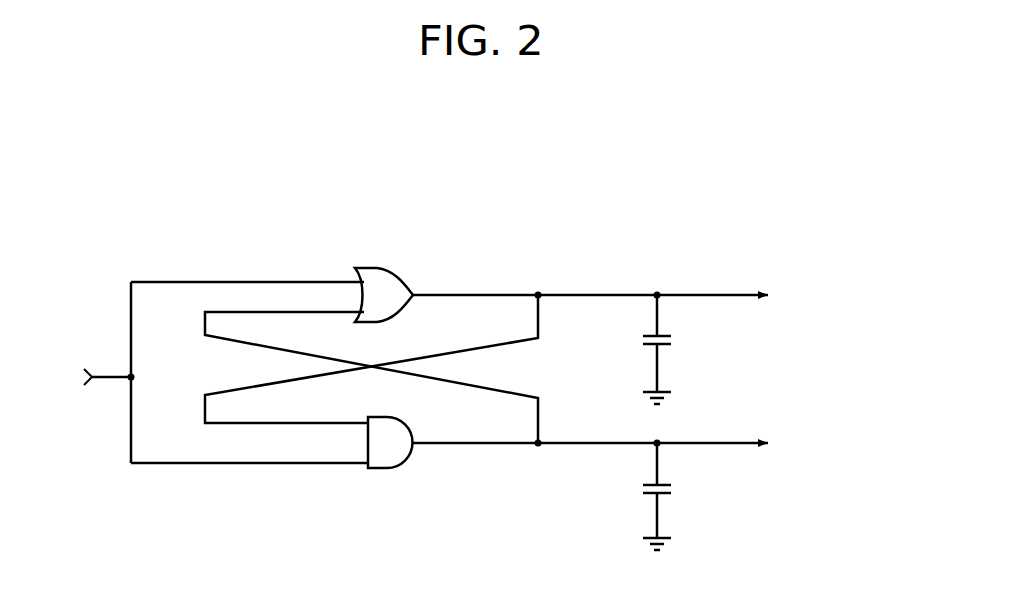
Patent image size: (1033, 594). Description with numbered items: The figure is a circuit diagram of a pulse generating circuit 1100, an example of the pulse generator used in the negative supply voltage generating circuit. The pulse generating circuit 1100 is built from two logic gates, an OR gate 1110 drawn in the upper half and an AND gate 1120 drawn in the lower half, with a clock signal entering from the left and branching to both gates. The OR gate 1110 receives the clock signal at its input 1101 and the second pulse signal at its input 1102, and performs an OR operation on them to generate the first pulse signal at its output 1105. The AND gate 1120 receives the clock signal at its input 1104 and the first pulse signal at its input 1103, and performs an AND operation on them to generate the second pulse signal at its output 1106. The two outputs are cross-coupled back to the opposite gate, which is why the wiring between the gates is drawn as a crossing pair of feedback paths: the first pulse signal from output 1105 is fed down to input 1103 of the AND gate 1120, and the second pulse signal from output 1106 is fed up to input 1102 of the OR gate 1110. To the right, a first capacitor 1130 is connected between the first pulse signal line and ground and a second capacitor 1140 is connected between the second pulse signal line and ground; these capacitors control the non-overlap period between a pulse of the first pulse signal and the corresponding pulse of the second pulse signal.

The pulse generating circuit 1100 is at (424, 329).
The input of OR gate 1101 is at (247, 247).
The input of OR gate 1102 is at (371, 328).
The input of AND gate 1103 is at (371, 411).
The input of AND gate 1104 is at (249, 495).
The output of OR gate 1105 is at (607, 269).
The output of AND gate 1106 is at (606, 473).
The OR gate 1110 is at (391, 265).
The AND gate 1120 is at (395, 472).
The first capacitor 1130 is at (708, 349).
The second capacitor 1140 is at (708, 496).